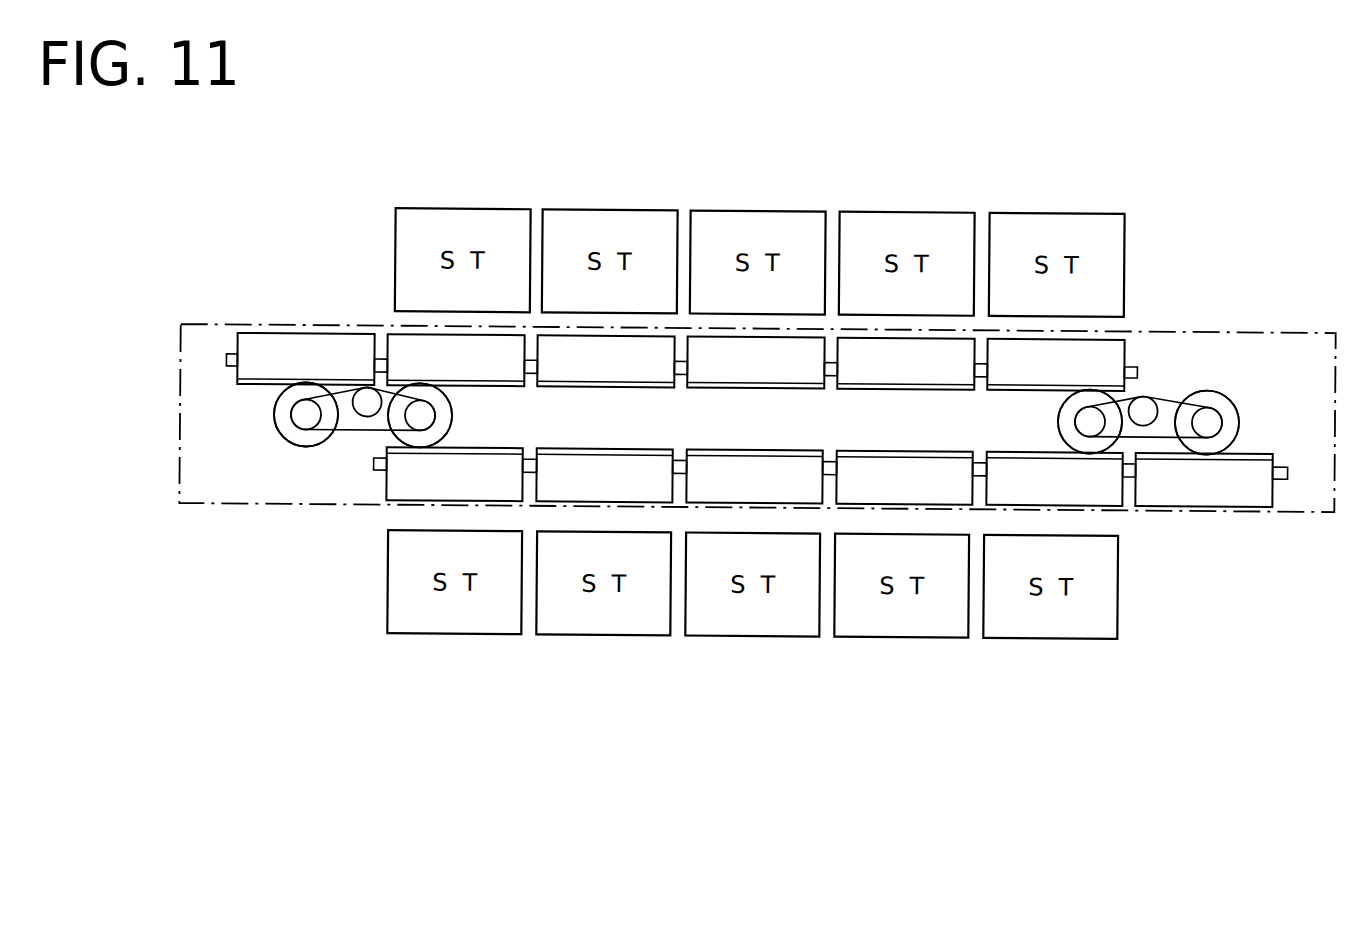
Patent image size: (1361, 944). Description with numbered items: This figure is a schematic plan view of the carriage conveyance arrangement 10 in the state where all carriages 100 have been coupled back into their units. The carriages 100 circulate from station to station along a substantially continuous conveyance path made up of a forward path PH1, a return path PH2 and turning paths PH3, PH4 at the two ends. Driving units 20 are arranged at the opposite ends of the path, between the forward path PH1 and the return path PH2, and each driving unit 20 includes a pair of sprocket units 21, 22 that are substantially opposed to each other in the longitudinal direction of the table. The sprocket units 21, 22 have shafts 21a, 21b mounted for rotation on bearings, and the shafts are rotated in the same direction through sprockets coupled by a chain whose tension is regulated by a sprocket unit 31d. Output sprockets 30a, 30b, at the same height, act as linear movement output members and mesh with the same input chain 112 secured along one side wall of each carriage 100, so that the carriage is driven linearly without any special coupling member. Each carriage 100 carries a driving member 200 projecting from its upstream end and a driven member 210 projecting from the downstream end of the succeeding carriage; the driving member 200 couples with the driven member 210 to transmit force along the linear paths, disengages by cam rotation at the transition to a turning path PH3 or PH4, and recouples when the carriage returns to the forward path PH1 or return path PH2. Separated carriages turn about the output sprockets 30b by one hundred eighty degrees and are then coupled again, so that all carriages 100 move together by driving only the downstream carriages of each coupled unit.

The pallet conveying system 10 is at (1150, 139).
The driving unit 20 is at (357, 220).
The sprocket unit 21 is at (407, 384).
The sprocket unit 22 is at (294, 385).
The shaft 21a is at (422, 421).
The shaft 21b is at (300, 421).
The output sprocket 30a is at (449, 423).
The output sprocket 30b is at (293, 410).
The sprocket unit 31d is at (355, 416).
The carriage 100 is at (712, 333).
The chain 112 is at (912, 390).
The driving member 200 is at (535, 455).
The driven member 210 is at (376, 476).
The forward path PH1 is at (768, 478).
The return path PH2 is at (737, 360).
The turning path PH3 is at (226, 396).
The turning path PH4 is at (1285, 441).